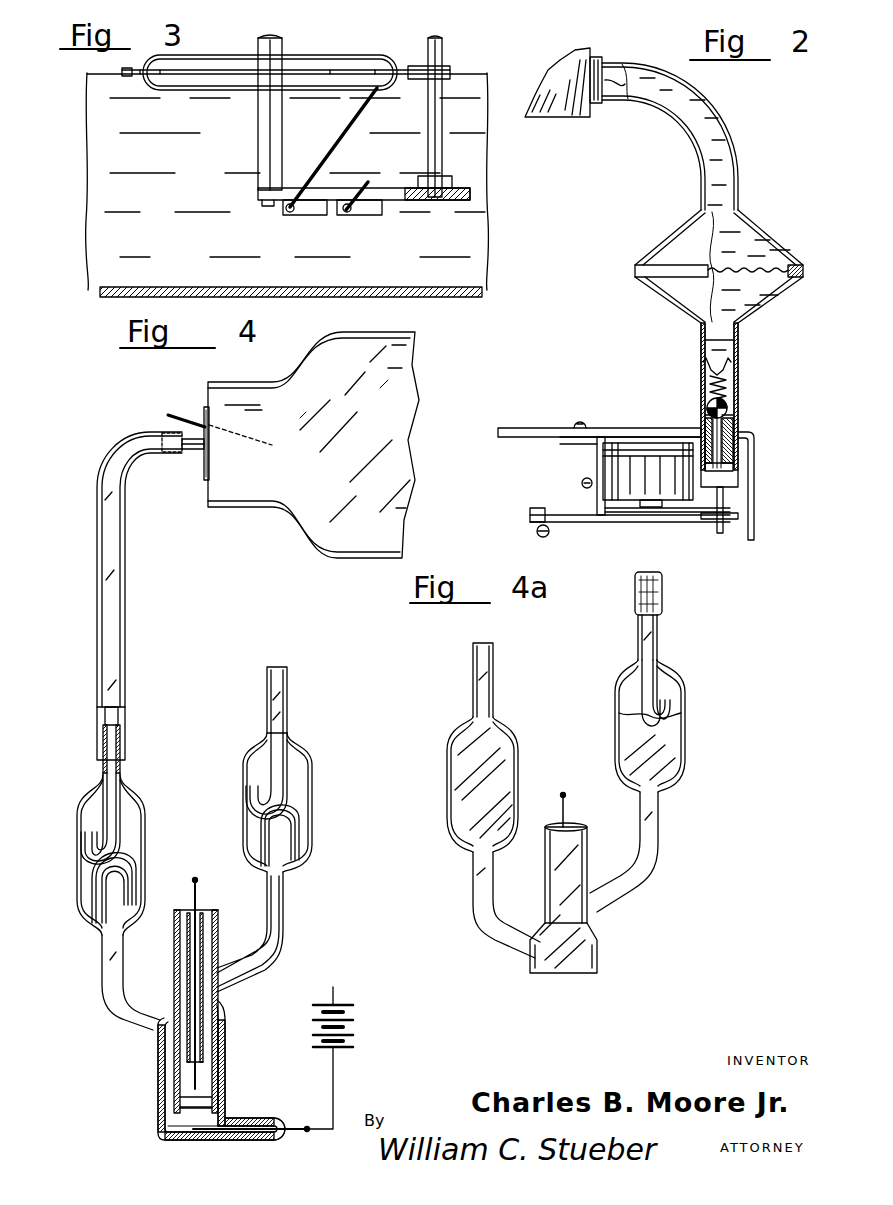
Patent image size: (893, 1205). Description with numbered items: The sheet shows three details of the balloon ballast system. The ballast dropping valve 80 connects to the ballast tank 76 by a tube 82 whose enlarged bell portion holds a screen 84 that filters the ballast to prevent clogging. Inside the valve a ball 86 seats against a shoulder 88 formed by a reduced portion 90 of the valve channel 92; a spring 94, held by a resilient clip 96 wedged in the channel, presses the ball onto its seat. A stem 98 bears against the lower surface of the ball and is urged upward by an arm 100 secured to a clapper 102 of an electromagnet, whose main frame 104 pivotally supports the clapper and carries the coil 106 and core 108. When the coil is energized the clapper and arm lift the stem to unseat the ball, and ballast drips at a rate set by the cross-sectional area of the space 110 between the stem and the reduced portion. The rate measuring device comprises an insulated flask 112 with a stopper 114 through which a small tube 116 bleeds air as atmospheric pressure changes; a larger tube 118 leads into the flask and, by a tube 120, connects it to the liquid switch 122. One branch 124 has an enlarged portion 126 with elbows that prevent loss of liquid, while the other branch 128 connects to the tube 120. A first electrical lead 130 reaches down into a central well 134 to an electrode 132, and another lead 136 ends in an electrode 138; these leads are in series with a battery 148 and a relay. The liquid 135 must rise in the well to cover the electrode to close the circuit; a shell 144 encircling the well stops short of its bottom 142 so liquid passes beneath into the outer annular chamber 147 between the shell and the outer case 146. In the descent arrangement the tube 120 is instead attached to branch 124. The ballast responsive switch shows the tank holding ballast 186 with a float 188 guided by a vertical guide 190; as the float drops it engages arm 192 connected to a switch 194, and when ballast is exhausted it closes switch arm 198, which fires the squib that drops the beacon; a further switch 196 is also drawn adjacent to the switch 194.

In FIG. 3, the ballast tank 76 is at (204, 288).
In FIG. 2, the ballast tank 76 is at (577, 63).
In FIG. 2, the ballast dropping valve 80 is at (681, 133).
In FIG. 2, the tube 82 is at (723, 107).
In FIG. 2, the screen 84 is at (770, 265).
In FIG. 2, the ball 86 is at (704, 405).
In FIG. 2, the shoulder 88 is at (738, 418).
In FIG. 2, the reduced portion 90 is at (706, 424).
In FIG. 2, the valve channel 92 is at (706, 345).
In FIG. 2, the spring 94 is at (727, 388).
In FIG. 2, the resilient clip 96 is at (700, 363).
In FIG. 2, the stem 98 is at (724, 498).
In FIG. 2, the arm 100 is at (732, 517).
In FIG. 2, the clapper 102 is at (693, 522).
In FIG. 2, the main frame 104 is at (517, 428).
In FIG. 2, the coil 106 is at (613, 470).
In FIG. 2, the core 108 is at (655, 504).
In FIG. 2, the space 110 is at (728, 457).
In FIG. 4, the flask 112 is at (407, 340).
In FIG. 4, the stopper 114 is at (205, 479).
In FIG. 4, the tube 116 is at (170, 413).
In FIG. 4, the larger tube 118 is at (193, 452).
In FIG. 4, the tube 120 is at (121, 599).
In FIG. 4A, the tube 120 is at (633, 603).
In FIG. 4, the liquid switch 122 is at (146, 805).
In FIG. 4A, the liquid switch 122 is at (522, 727).
In FIG. 4, the branch 124 is at (267, 676).
In FIG. 4A, the branch 124 is at (660, 640).
In FIG. 4, the enlarged portion 126 is at (257, 743).
In FIG. 4A, the enlarged portion 126 is at (684, 678).
In FIG. 4, the branch 128 is at (121, 771).
In FIG. 4A, the branch 128 is at (473, 673).
In FIG. 4, the first electrical lead 130 is at (196, 880).
In FIG. 4A, the first electrical lead 130 is at (566, 796).
In FIG. 4, the electrode 132 is at (199, 1068).
In FIG. 4, the central well 134 is at (180, 1108).
In FIG. 4, the liquid 135 is at (180, 1128).
In FIG. 4, the lead 136 is at (300, 1126).
In FIG. 4, the electrode 138 is at (228, 1134).
In FIG. 4, the bottom 142 is at (258, 1142).
In FIG. 4, the shell 144 is at (218, 1079).
In FIG. 4, the outer case 146 is at (226, 1013).
In FIG. 4A, the outer case 146 is at (594, 933).
In FIG. 4, the outer annular chamber 147 is at (165, 1068).
In FIG. 4, the battery 148 is at (340, 999).
In FIG. 3, the ballast 186 is at (139, 162).
In FIG. 3, the float 188 is at (337, 65).
In FIG. 3, the vertical guide 190 is at (267, 111).
In FIG. 3, the arm 192 is at (353, 128).
In FIG. 3, the switch 194 is at (310, 213).
In FIG. 3, the bracket 196 is at (362, 215).
In FIG. 3, the switch arm 198 is at (354, 182).